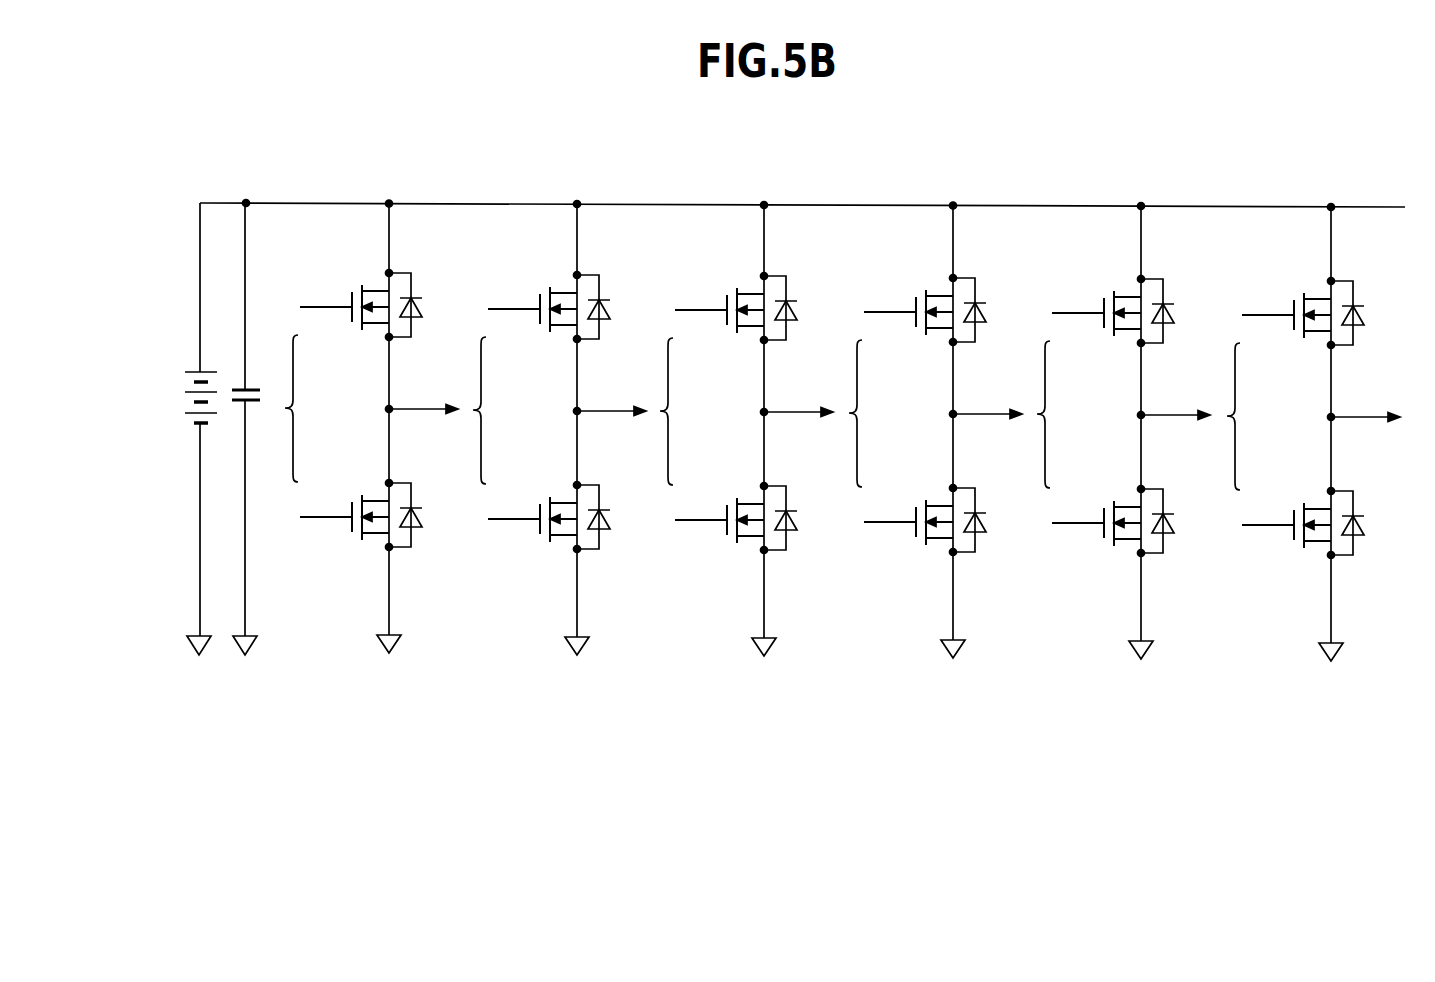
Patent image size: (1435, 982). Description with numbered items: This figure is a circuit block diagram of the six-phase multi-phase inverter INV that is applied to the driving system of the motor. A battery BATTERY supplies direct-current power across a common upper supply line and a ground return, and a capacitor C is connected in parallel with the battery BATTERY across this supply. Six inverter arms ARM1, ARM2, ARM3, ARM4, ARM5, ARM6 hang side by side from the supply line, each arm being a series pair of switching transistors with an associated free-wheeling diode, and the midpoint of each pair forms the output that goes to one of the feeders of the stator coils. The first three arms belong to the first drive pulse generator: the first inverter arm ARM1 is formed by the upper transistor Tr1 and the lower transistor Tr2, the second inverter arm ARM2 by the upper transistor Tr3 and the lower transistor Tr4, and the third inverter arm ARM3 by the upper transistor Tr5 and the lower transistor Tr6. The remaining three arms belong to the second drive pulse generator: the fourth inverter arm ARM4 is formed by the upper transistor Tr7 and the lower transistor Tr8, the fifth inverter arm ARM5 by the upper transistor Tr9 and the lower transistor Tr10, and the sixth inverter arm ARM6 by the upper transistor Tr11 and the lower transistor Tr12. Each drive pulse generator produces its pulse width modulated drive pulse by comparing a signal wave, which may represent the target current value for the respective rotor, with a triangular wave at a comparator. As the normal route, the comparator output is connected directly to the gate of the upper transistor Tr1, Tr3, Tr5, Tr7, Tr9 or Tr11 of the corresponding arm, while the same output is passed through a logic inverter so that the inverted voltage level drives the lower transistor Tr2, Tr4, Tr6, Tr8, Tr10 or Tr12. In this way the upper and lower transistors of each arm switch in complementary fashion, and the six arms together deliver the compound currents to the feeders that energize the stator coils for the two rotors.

The multi-phase inverter INV is at (516, 204).
The battery BATTERY is at (169, 429).
The capacitor C is at (252, 429).
The upper transistor of first inverter arm Tr1 is at (361, 301).
The lower transistor of first inverter arm Tr2 is at (361, 511).
The upper transistor of second inverter arm Tr3 is at (549, 303).
The lower transistor of second inverter arm Tr4 is at (549, 513).
The upper transistor of third inverter arm Tr5 is at (736, 304).
The lower transistor of third inverter arm Tr6 is at (736, 514).
The upper transistor of fourth inverter arm Tr7 is at (925, 306).
The lower transistor of fourth inverter arm Tr8 is at (925, 516).
The upper transistor of fifth inverter arm Tr9 is at (1113, 307).
The lower transistor of fifth inverter arm Tr10 is at (1113, 517).
The upper transistor of sixth inverter arm Tr11 is at (1303, 309).
The lower transistor of sixth inverter arm Tr12 is at (1303, 519).
The first inverter arm ARM1 is at (373, 426).
The second inverter arm ARM2 is at (561, 428).
The third inverter arm ARM3 is at (748, 429).
The fourth inverter arm ARM4 is at (937, 431).
The fifth inverter arm ARM5 is at (1125, 432).
The sixth inverter arm ARM6 is at (1315, 434).